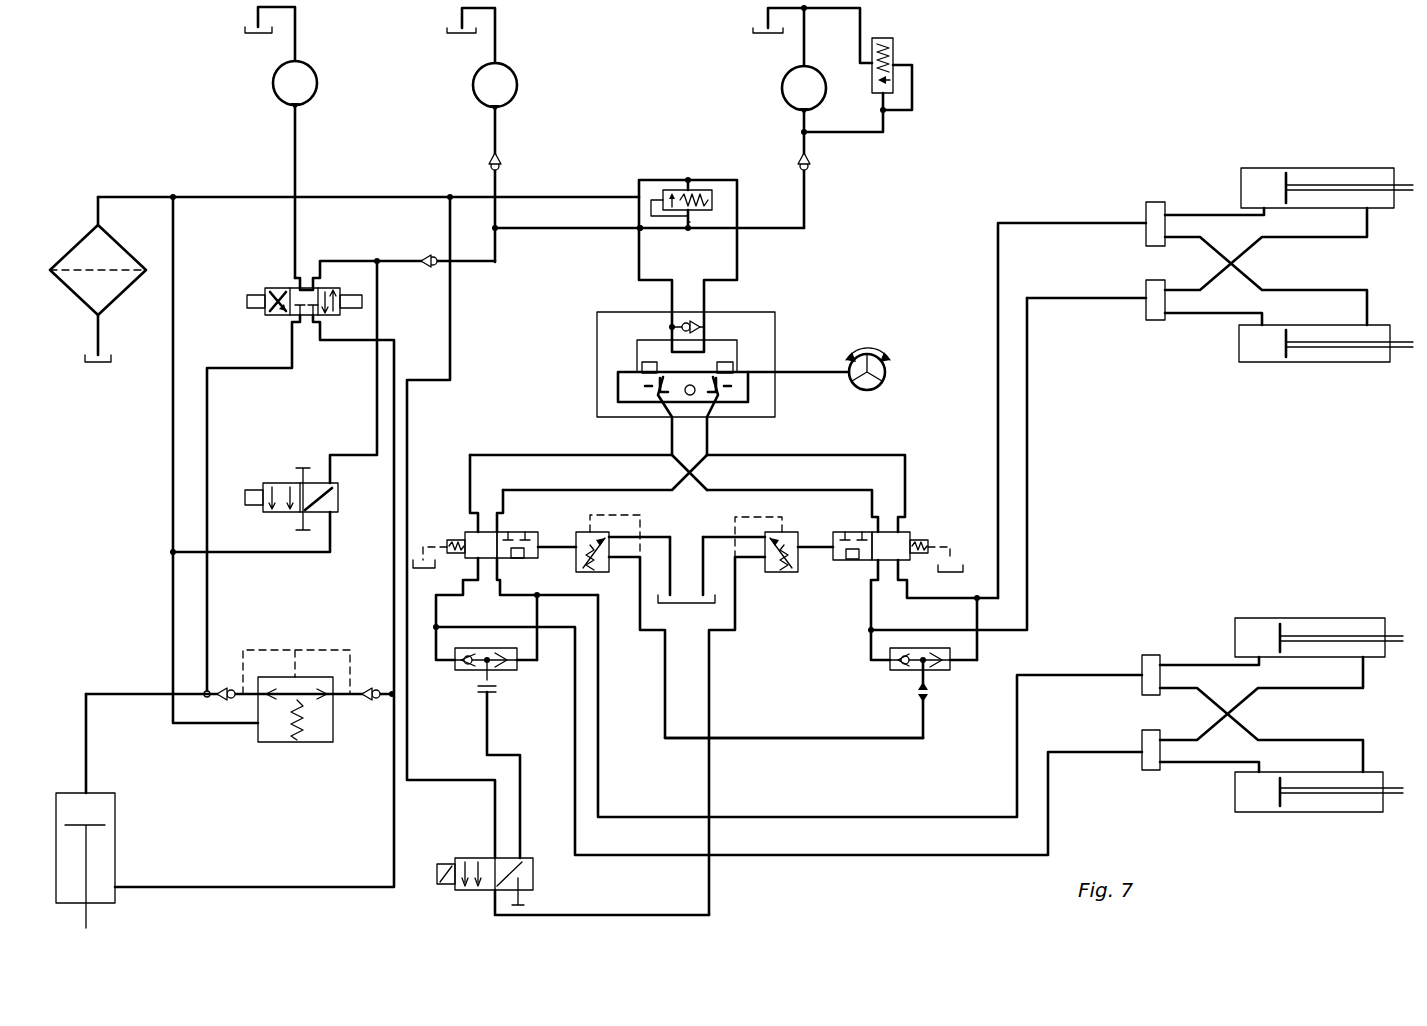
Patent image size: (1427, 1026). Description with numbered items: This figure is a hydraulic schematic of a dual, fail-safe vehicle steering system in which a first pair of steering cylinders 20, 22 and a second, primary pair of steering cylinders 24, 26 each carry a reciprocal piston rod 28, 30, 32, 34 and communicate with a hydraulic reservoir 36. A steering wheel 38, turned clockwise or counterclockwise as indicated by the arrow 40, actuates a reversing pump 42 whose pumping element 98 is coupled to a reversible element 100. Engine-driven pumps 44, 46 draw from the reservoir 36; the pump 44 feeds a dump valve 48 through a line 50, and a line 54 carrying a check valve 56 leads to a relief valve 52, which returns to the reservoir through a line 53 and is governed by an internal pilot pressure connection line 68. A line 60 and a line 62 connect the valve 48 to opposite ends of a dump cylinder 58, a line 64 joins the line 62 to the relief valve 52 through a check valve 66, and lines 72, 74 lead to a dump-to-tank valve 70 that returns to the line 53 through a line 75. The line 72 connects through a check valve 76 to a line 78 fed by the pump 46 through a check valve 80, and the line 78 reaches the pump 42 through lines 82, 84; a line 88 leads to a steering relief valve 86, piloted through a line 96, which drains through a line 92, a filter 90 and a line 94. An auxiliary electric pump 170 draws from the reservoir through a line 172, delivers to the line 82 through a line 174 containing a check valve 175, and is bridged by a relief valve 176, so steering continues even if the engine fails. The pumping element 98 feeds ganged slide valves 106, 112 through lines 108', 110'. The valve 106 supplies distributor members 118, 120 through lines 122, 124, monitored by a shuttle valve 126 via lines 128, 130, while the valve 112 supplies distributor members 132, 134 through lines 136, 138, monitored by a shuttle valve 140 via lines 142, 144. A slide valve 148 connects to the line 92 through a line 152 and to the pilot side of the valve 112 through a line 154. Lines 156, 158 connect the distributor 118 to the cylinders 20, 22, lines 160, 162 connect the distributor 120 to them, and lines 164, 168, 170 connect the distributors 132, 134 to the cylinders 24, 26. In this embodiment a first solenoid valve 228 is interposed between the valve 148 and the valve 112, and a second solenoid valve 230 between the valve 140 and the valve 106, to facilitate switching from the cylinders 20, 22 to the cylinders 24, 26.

The steering cylinder 20 is at (1335, 812).
The steering cylinder 22 is at (1335, 618).
The steering cylinder 24 is at (1330, 362).
The steering cylinder 26 is at (1340, 168).
The piston rod 28 is at (1395, 793).
The piston rod 30 is at (1393, 645).
The piston rod 32 is at (1405, 348).
The piston rod 34 is at (1395, 184).
The reservoir 36 is at (258, 35).
The steering wheel 38 is at (885, 376).
The arrow 40 is at (870, 345).
The pump 42 is at (762, 330).
The pump 44 is at (305, 92).
The pump 46 is at (506, 93).
The slide valve 48 is at (275, 318).
The line 50 is at (298, 152).
The relief valve 52 is at (315, 735).
The line 53 is at (171, 410).
The line 54 is at (210, 600).
The check valve 56 is at (226, 702).
The dump cylinder 58 is at (108, 855).
The line 60 is at (123, 692).
The line 62 is at (392, 827).
The line 64 is at (386, 690).
The check valve 66 is at (370, 702).
The internal pilot pressure connection line 68 is at (336, 650).
The dump-to-tank valve 70 is at (336, 498).
The line 72 is at (330, 262).
The line 74 is at (380, 313).
The line 75 is at (315, 553).
The check valve 76 is at (427, 258).
The line 78 is at (497, 250).
The check valve 80 is at (502, 163).
The line 82 is at (630, 232).
The line 84 is at (645, 255).
The steering relief valve 86 is at (698, 180).
The line 88 is at (694, 222).
The filter 90 is at (92, 240).
The line 92 is at (203, 195).
The line 94 is at (102, 326).
The line 96 is at (650, 211).
The pumping element 98 is at (688, 395).
The reversible element 100 is at (645, 338).
The slide valve 106 is at (505, 562).
The line 108' is at (687, 472).
The line 110' is at (690, 493).
The slide valve 112 is at (868, 565).
The distributor member 118 is at (1147, 772).
The distributor member 120 is at (1150, 655).
The line 122 is at (916, 858).
The line 124 is at (958, 815).
The shuttle valve 126 is at (463, 675).
The line 128 is at (440, 605).
The line 130 is at (540, 655).
The distributor member 132 is at (1158, 322).
The distributor member 134 is at (1146, 205).
The line 136 is at (1082, 299).
The line 138 is at (1040, 222).
The shuttle valve 140 is at (935, 675).
The line 142 is at (870, 615).
The line 144 is at (980, 648).
The slide valve 148 is at (895, 740).
The line 152 is at (455, 335).
The line 154 is at (645, 915).
The line 156 is at (1205, 765).
The line 158 is at (1314, 690).
The line 160 is at (1205, 662).
The line 162 is at (1340, 738).
The line 164 is at (1215, 315).
The line 168 is at (1210, 212).
The auxiliary pump 170 is at (783, 92).
The line 172 is at (806, 50).
The line 174 is at (806, 212).
The check valve 175 is at (812, 161).
The relief valve 176 is at (895, 50).
The first solenoid valve 228 is at (790, 572).
The second solenoid valve 230 is at (590, 572).